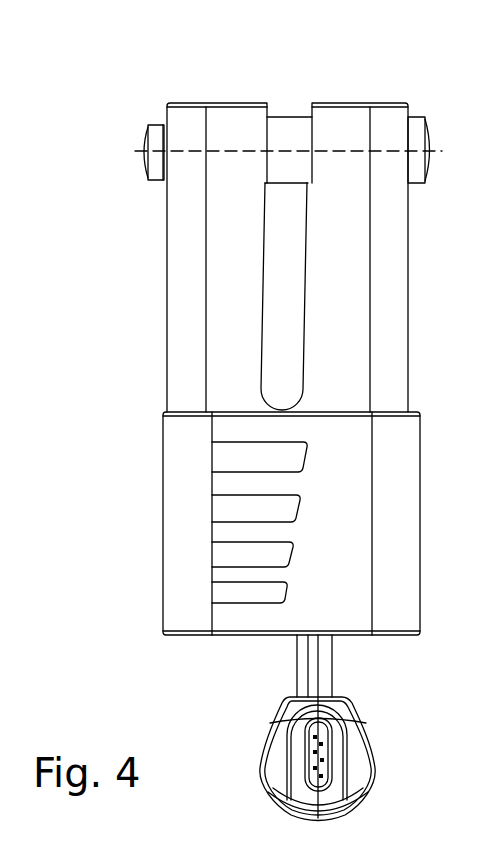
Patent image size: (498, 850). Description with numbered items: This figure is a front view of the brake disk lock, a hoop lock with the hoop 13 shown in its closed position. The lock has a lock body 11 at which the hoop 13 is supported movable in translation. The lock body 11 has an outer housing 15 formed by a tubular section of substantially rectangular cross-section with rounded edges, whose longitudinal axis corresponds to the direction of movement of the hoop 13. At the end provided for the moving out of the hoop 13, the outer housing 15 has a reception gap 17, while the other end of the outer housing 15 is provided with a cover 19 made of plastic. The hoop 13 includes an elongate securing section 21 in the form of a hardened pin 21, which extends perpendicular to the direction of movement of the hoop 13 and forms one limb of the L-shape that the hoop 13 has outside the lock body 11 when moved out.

The lock body 11 is at (148, 328).
The hoop 13 is at (283, 100).
The outer housing 15 is at (185, 378).
The reception gap 17 is at (280, 252).
The cover 19 is at (183, 542).
The securing section 21 is at (292, 133).